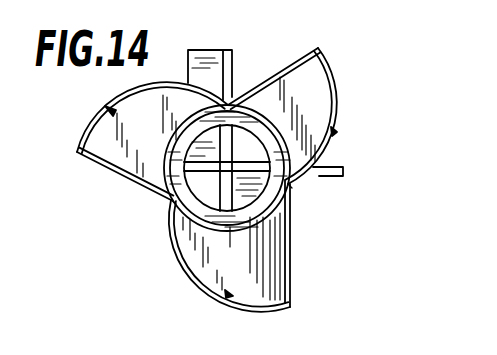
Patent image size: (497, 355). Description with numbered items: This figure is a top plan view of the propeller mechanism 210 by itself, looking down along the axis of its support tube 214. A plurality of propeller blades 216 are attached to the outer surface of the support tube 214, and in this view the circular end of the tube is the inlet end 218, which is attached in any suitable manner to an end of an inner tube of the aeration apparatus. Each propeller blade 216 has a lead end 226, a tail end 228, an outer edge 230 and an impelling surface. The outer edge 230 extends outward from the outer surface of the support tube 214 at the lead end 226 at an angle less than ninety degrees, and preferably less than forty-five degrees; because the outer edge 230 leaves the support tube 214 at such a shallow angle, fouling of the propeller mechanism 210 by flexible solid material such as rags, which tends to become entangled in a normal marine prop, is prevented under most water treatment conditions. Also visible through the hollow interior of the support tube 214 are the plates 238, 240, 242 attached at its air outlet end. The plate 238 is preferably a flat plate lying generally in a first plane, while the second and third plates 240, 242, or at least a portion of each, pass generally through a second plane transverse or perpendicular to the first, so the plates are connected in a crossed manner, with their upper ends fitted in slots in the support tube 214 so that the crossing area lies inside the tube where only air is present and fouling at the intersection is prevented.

The propeller mechanism 210 is at (237, 183).
The support tube 214 is at (239, 188).
The propeller blades 216 is at (109, 111).
The inlet end 218 is at (200, 193).
The lead end 226 is at (289, 190).
The tail end 228 is at (268, 77).
The outer edge 230 is at (340, 102).
The plate 238 is at (343, 173).
The second plate 240 is at (213, 58).
The third plate 242 is at (243, 198).